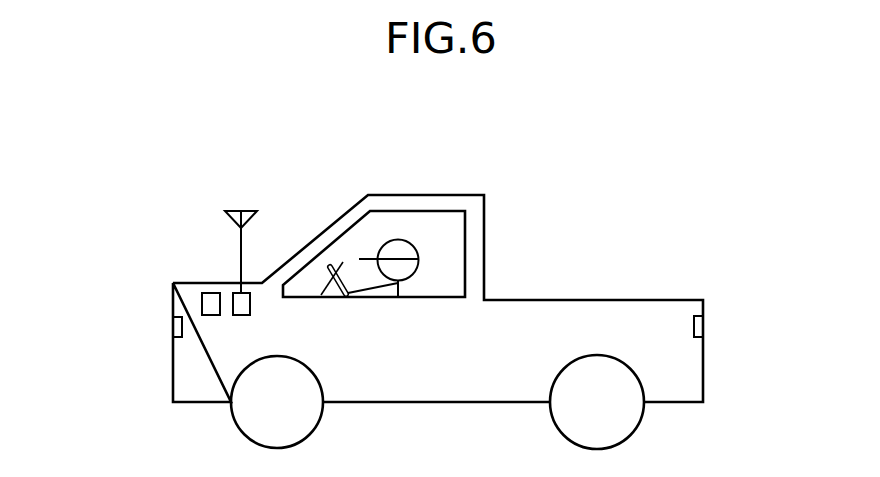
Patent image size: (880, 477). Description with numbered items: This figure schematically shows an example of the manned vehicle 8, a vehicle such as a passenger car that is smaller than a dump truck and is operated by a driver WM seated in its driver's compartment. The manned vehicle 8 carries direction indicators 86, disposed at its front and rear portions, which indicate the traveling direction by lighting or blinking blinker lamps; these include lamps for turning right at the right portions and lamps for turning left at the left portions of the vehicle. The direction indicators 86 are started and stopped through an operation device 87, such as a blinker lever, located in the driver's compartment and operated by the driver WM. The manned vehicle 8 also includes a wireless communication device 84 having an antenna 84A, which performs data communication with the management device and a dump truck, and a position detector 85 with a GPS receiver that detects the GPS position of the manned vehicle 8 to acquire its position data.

The manned vehicle 8 is at (578, 156).
The antenna 84A is at (233, 210).
The position detector 85 is at (210, 292).
The wireless communication device 84 is at (250, 305).
The operation device 87 is at (343, 261).
The driver WM is at (398, 239).
The direction indicators 86 is at (173, 327).